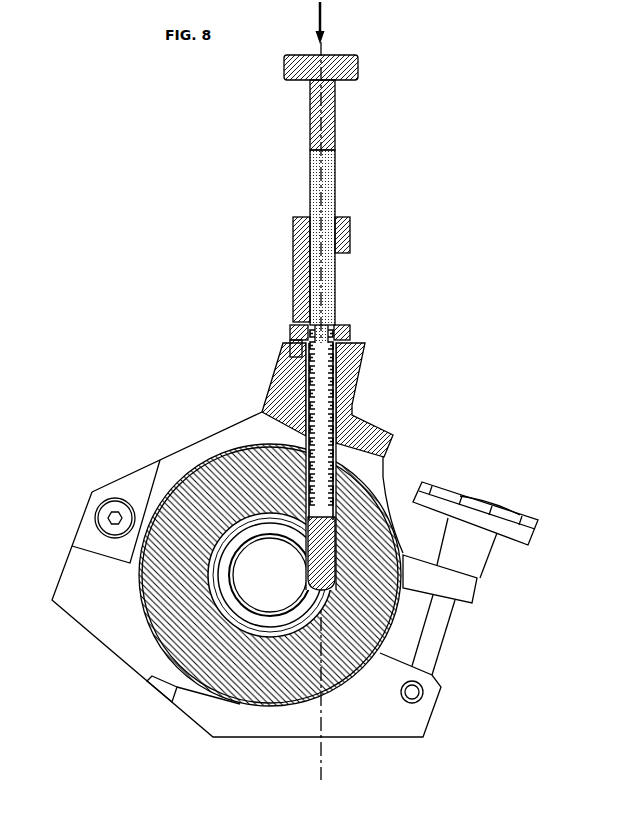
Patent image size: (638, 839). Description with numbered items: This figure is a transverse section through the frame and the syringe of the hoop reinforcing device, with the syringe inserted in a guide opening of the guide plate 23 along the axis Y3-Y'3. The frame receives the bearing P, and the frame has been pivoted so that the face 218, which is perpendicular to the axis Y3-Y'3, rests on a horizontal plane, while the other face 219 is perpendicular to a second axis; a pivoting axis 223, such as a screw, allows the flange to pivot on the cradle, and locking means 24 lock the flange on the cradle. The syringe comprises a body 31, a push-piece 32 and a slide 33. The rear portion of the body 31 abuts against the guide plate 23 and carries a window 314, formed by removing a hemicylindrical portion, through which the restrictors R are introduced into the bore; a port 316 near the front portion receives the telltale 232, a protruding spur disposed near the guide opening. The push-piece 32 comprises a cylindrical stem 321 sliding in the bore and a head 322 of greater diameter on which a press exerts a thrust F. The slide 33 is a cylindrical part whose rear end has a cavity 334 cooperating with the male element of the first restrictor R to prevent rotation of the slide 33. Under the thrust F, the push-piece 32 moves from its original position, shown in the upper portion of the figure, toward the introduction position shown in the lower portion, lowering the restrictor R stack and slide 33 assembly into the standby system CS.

The push-piece 32 is at (318, 240).
The head 322 is at (293, 68).
The cylindrical stem 321 is at (313, 152).
The window 314 is at (343, 280).
The body 31 is at (297, 252).
The port 316 is at (292, 325).
The telltale 232 is at (290, 342).
The guide plate 23 is at (285, 382).
The bearing P is at (200, 505).
The standby system CS is at (303, 490).
The restrictors R is at (323, 472).
The slide 33 is at (330, 567).
The cavity 334 is at (332, 543).
The locking means 24 is at (512, 560).
The pivoting axis 223 is at (100, 518).
The face 219 is at (132, 672).
The face 218 is at (393, 740).
The thrust F is at (325, 23).
The axis Y3-Y'3 Y3 is at (325, 42).
The axis Y3- Y'3 is at (352, 763).